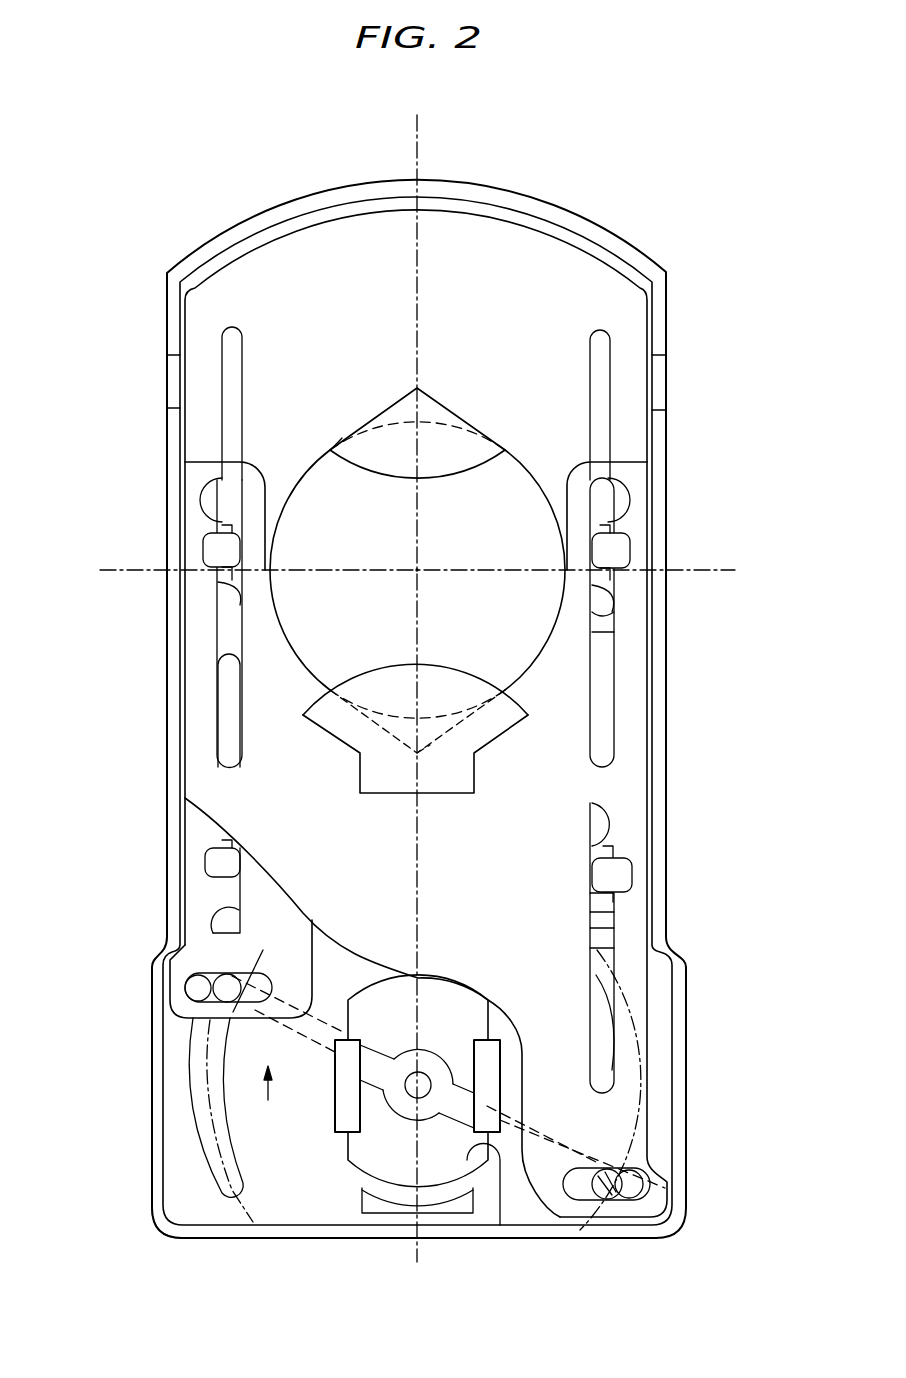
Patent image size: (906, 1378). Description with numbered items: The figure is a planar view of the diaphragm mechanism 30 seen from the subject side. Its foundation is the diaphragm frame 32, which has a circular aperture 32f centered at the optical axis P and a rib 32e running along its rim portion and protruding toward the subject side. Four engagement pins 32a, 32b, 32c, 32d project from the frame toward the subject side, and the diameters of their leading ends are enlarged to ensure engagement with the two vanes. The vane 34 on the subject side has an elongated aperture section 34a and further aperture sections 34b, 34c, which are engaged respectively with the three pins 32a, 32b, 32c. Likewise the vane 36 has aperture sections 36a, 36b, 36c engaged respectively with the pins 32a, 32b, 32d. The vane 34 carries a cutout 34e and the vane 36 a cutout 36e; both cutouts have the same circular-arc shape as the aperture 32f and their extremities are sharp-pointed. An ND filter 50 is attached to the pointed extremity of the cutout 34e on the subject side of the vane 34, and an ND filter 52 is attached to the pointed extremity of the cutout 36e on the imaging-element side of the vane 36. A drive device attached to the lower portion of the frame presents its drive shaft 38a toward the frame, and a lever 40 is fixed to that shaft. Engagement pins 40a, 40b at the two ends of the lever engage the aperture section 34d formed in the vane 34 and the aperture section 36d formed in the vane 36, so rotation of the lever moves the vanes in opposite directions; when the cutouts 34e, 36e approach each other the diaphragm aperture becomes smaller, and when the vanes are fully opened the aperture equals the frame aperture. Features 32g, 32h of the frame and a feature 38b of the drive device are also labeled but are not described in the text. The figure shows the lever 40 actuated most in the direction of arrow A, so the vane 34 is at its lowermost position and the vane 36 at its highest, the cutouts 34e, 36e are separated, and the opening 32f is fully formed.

The diaphragm mechanism 30 is at (538, 200).
The diaphragm frame 32 is at (333, 1200).
The engagement pin 32a is at (620, 548).
The engagement pin 32b is at (222, 548).
The engagement pin 32c is at (620, 875).
The engagement pin 32d is at (222, 858).
The rib 32e is at (680, 1087).
The circular aperture 32f is at (565, 528).
The frame bottom corner 32g is at (200, 1236).
The frame projection 32h is at (498, 1140).
The vane 34 is at (218, 783).
The elongated aperture section 34a is at (600, 690).
The aperture section 34b is at (240, 627).
The aperture section 34c is at (575, 935).
The aperture section 34d is at (650, 1172).
The cutout 34e is at (455, 700).
The vane 36 is at (290, 262).
The aperture section 36a is at (590, 378).
The aperture section 36b is at (233, 382).
The aperture section 36c is at (225, 898).
The aperture section 36d is at (178, 980).
The cutout 36e is at (372, 425).
The drive shaft 38a is at (407, 1092).
The arc-shaped slot 38b is at (323, 1117).
The lever 40 is at (447, 1120).
The engagement pin 40a is at (640, 1188).
The engagement pin 40b is at (188, 1005).
The ND filter 50 is at (492, 726).
The ND filter 52 is at (575, 462).
The optical axis P is at (417, 577).
The arrow A is at (281, 1094).